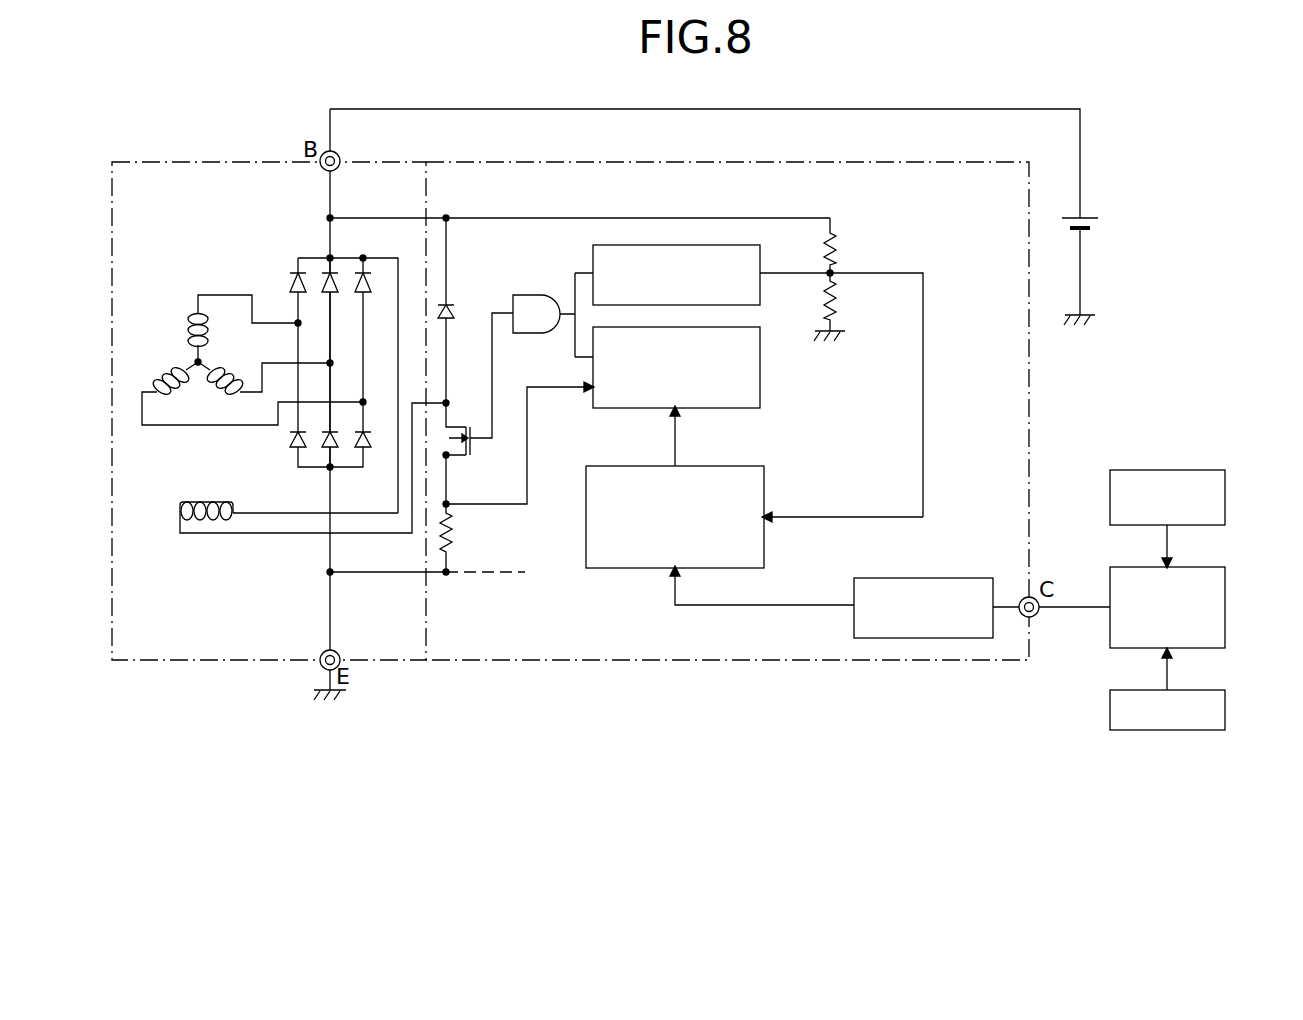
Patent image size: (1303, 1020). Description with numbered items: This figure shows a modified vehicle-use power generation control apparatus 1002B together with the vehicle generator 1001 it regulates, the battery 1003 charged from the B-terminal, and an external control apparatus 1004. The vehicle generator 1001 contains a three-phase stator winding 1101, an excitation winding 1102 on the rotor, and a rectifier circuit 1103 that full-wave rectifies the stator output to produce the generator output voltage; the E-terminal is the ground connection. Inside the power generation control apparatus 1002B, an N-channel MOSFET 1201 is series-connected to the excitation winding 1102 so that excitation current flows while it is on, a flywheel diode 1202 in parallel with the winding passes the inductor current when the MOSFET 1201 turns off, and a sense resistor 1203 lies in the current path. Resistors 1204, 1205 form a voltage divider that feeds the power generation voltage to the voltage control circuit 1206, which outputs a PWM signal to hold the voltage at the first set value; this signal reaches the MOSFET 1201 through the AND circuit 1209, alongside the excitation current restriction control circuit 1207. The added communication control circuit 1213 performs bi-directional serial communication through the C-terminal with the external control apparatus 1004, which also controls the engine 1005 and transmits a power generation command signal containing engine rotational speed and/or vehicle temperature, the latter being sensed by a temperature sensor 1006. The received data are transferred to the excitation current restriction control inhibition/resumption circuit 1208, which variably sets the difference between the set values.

The vehicle generator 1001 is at (121, 159).
The power generation control apparatus 1002B is at (978, 146).
The battery 1003 is at (1090, 217).
The external control apparatus 1004 is at (1188, 567).
The engine 1005 is at (1188, 690).
The temperature sensor 1006 is at (1188, 470).
The stator winding 1101 is at (194, 361).
The excitation winding 1102 is at (197, 502).
The rectifier circuit 1103 is at (312, 257).
The MOSFET 1201 is at (469, 450).
The flywheel diode 1202 is at (447, 306).
The sense resistor 1203 is at (451, 541).
The resistor 1204 is at (838, 252).
The resistor 1205 is at (838, 306).
The voltage control circuit 1206 is at (592, 258).
The excitation current restriction control circuit 1207 is at (719, 367).
The excitation current restriction control inhibition/resumption circuit 1208 is at (768, 483).
The AND circuit 1209 is at (540, 333).
The communication control circuit 1213 is at (955, 578).